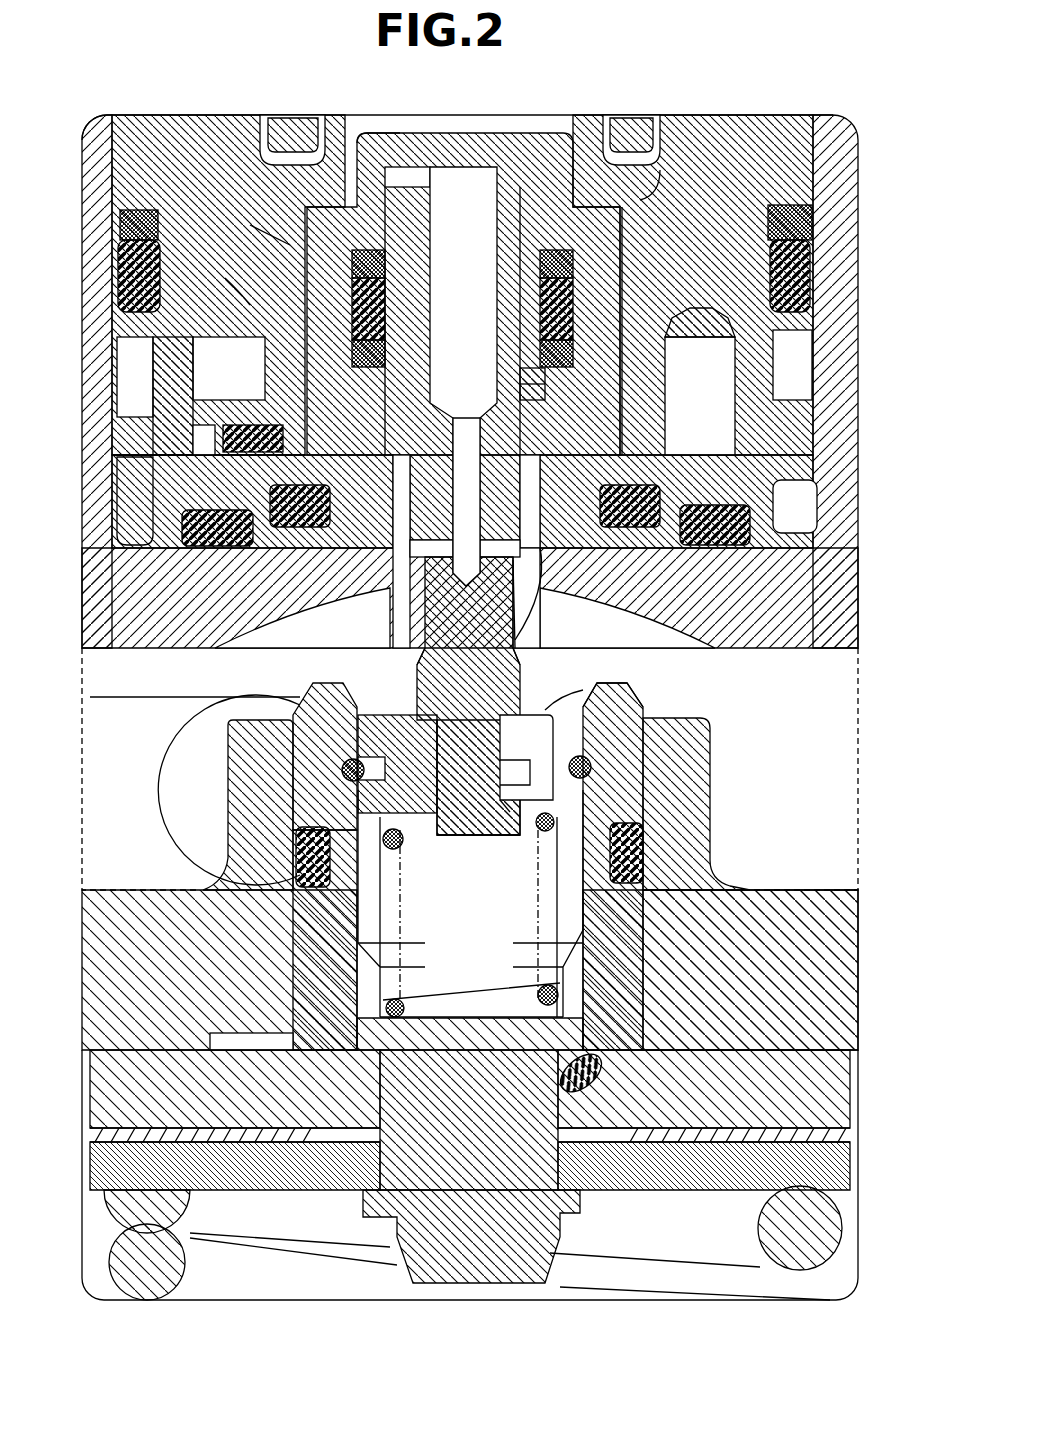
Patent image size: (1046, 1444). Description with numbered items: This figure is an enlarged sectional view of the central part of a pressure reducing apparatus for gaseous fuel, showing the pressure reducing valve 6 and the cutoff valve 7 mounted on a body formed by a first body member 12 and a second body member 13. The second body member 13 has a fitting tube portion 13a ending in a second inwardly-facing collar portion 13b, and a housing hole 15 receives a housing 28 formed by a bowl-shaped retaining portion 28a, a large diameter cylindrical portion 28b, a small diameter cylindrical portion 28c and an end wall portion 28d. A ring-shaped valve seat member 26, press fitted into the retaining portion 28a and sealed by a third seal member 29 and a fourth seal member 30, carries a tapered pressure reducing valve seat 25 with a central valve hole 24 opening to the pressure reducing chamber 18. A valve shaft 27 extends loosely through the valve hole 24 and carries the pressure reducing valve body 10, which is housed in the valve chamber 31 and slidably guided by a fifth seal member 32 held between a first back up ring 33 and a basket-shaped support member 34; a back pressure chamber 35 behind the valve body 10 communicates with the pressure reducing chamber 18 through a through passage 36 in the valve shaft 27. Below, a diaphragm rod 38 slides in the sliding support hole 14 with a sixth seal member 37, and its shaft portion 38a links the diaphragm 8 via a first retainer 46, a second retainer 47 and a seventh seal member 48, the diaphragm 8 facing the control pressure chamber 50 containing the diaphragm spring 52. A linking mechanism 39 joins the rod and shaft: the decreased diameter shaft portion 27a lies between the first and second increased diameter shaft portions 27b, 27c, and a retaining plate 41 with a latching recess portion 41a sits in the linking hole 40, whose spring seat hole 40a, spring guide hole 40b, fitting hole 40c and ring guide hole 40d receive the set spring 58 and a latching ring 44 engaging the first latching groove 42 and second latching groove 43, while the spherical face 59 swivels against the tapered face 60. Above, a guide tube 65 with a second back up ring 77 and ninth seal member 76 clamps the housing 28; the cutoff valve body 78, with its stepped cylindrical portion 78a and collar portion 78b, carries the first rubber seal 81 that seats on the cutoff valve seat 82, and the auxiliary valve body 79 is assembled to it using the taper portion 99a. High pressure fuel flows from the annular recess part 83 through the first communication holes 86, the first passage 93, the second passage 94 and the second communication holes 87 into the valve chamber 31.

The pressure reducing valve 6 is at (517, 580).
The cutoff valve 7 is at (737, 377).
The diaphragm 8 is at (217, 1128).
The pressure reducing valve body 10 is at (398, 555).
The first body member 12 is at (857, 1070).
The second body member 13 is at (140, 590).
The fitting tube portion 13a is at (162, 425).
The second inwardly-facing collar portion 13b is at (140, 622).
The sliding support hole 14 is at (640, 1005).
The housing hole 15 is at (783, 225).
The pressure reducing chamber 18 is at (805, 703).
The valve hole 24 is at (412, 547).
The pressure reducing valve seat 25 is at (442, 395).
The valve seat member 26 is at (575, 522).
The valve shaft 27 is at (465, 687).
The decreased diameter shaft portion 27a is at (492, 772).
The first increased diameter shaft portion 27b is at (520, 662).
The second increased diameter shaft portion 27c is at (497, 840).
The housing 28 is at (497, 128).
The retaining portion 28a is at (817, 480).
The large diameter cylindrical portion 28b is at (240, 292).
The small diameter cylindrical portion 28c is at (590, 147).
The end wall portion 28d is at (375, 133).
The third seal member 29 is at (720, 540).
The fourth seal member 30 is at (293, 530).
The valve chamber 31 is at (200, 400).
The fifth seal member 32 is at (668, 243).
The first back up ring 33 is at (668, 210).
The support member 34 is at (700, 313).
The back pressure chamber 35 is at (445, 178).
The through passage 36 is at (543, 583).
The sixth seal member 37 is at (246, 858).
The diaphragm rod 38 is at (293, 1030).
The shaft portion 38a is at (403, 1267).
The linking mechanism 39 is at (358, 705).
The linking hole 40 is at (680, 866).
The spring seat hole 40a is at (655, 935).
The spring guide hole 40b is at (713, 850).
The fitting hole 40c is at (655, 795).
The ring guide hole 40d is at (660, 699).
The retaining plate 41 is at (452, 722).
The latching recess portion 41a is at (473, 857).
The first latching groove 42 is at (387, 770).
The second latching groove 43 is at (298, 830).
The latching ring 44 is at (343, 762).
The first retainer 46 is at (283, 1125).
The second retainer 47 is at (730, 1177).
The seventh seal member 48 is at (592, 1100).
The control pressure chamber 50 is at (225, 1295).
The diaphragm spring 52 is at (757, 1227).
The set spring 58 is at (407, 1005).
The spherical face 59 is at (532, 838).
The tapered face 60 is at (440, 845).
The guide tube 65 is at (772, 128).
The ninth seal member 76 is at (135, 275).
The second back up ring 77 is at (140, 228).
The cutoff valve body 78 is at (273, 177).
The stepped cylindrical portion 78a is at (270, 235).
The collar portion 78b is at (205, 440).
The auxiliary valve body 79 is at (272, 125).
The first rubber seal 81 is at (650, 450).
The cutoff valve seat 82 is at (185, 520).
The annular recess part 83 is at (777, 373).
The first communication holes 86 is at (150, 352).
The second communication holes 87 is at (528, 380).
The first passage 93 is at (110, 162).
The second passage 94 is at (265, 350).
The taper portion 99a is at (670, 140).